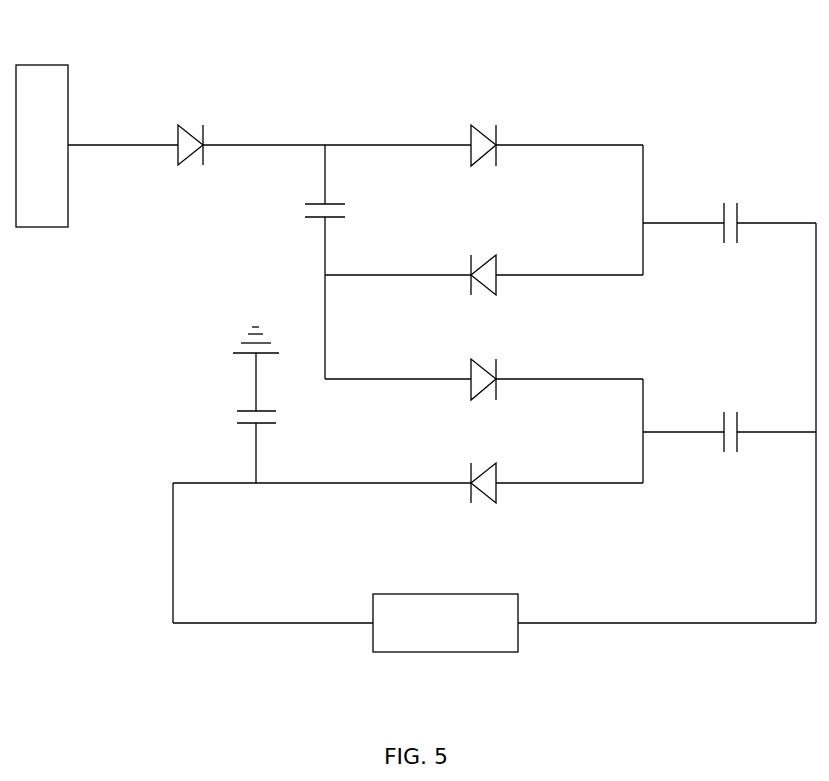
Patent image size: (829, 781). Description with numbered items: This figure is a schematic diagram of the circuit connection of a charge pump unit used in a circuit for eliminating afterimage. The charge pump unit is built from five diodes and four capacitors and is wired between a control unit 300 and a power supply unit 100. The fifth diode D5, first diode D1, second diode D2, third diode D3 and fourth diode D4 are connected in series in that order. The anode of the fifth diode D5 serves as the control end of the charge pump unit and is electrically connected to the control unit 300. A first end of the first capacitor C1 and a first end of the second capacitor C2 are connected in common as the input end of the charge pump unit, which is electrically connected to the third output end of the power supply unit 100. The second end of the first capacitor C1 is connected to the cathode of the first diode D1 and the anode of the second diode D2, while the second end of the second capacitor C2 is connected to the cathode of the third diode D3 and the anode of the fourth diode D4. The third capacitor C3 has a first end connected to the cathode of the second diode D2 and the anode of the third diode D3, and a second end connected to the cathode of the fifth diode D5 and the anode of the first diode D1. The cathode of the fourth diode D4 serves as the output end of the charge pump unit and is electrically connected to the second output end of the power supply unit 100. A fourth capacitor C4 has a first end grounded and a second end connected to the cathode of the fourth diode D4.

The power supply unit 100 is at (445, 652).
The control unit 300 is at (52, 65).
The first diode D1 is at (484, 164).
The second diode D2 is at (478, 292).
The third diode D3 is at (481, 400).
The fourth diode D4 is at (481, 501).
The fifth diode D5 is at (191, 163).
The first capacitor C1 is at (728, 241).
The second capacitor C2 is at (725, 452).
The third capacitor C3 is at (308, 228).
The fourth capacitor C4 is at (237, 405).